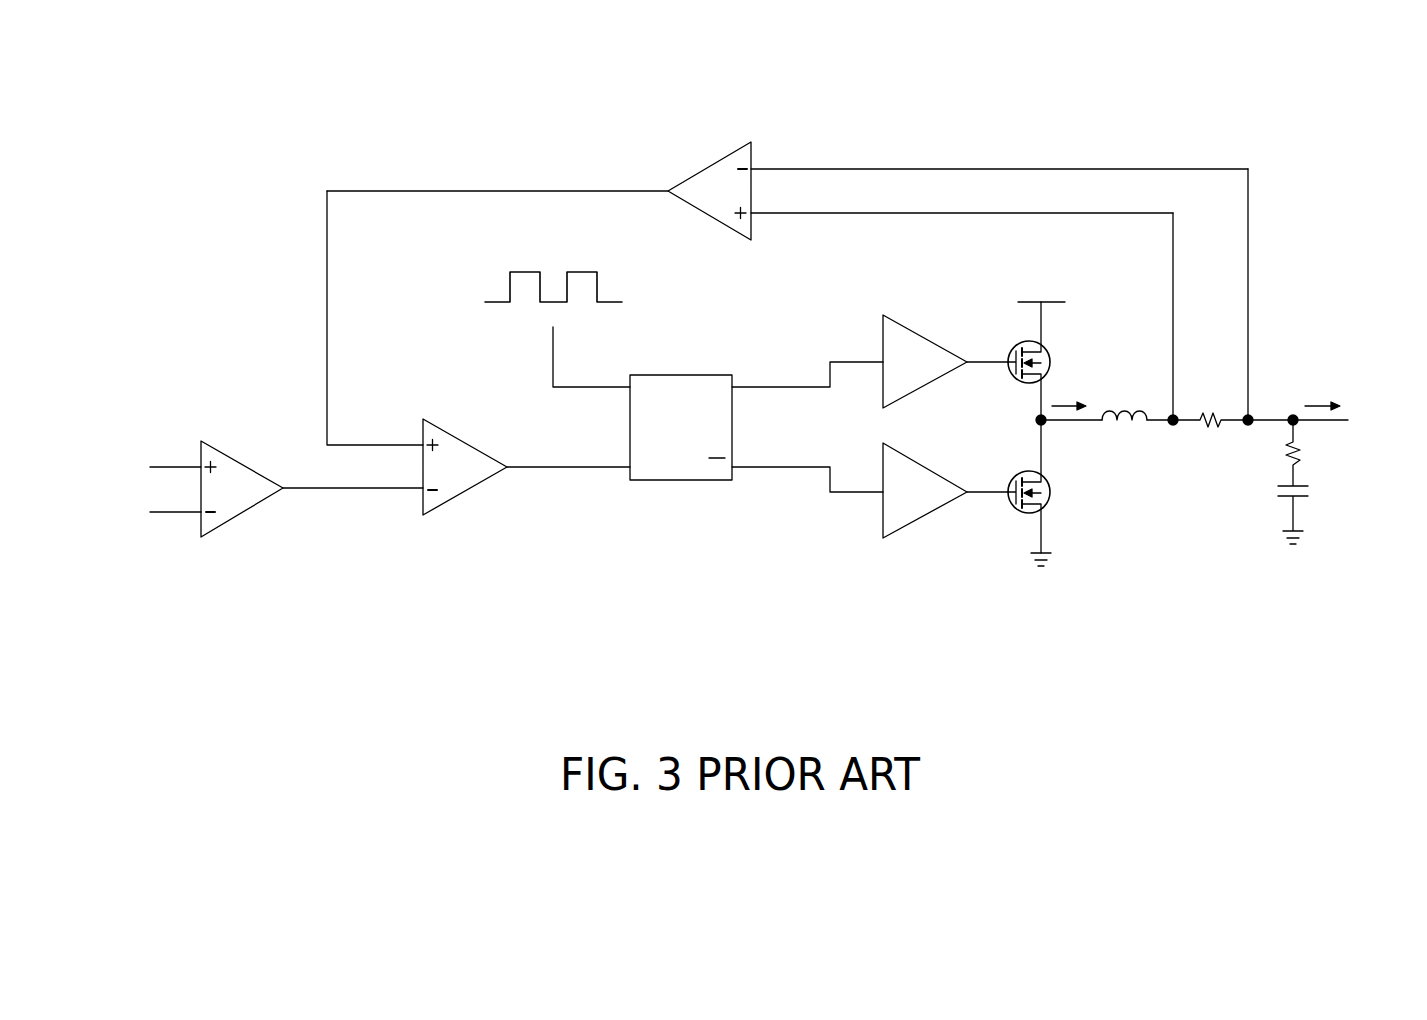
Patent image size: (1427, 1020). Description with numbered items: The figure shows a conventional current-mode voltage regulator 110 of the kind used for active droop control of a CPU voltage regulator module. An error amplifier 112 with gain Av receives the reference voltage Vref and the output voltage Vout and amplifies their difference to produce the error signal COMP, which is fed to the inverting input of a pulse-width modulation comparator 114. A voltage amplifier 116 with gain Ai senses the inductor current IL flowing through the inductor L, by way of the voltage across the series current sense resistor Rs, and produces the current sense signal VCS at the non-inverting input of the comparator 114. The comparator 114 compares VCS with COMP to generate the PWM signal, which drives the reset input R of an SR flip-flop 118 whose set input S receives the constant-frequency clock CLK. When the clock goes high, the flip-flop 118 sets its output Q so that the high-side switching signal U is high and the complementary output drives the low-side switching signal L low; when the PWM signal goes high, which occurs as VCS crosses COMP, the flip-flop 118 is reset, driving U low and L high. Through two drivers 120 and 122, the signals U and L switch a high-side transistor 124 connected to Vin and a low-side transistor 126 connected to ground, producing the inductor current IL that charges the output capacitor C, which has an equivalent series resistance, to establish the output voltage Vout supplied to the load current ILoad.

The current-mode voltage regulator 110 is at (1289, 116).
The error amplifier 112 is at (243, 462).
The pulse-width modulation comparator 114 is at (467, 437).
The voltage amplifier 116 is at (708, 167).
The SR flip-flop 118 is at (667, 375).
The driver 120 is at (925, 328).
The driver 122 is at (923, 518).
The high-side transistor 124 is at (1057, 337).
The low-side transistor 126 is at (1056, 506).